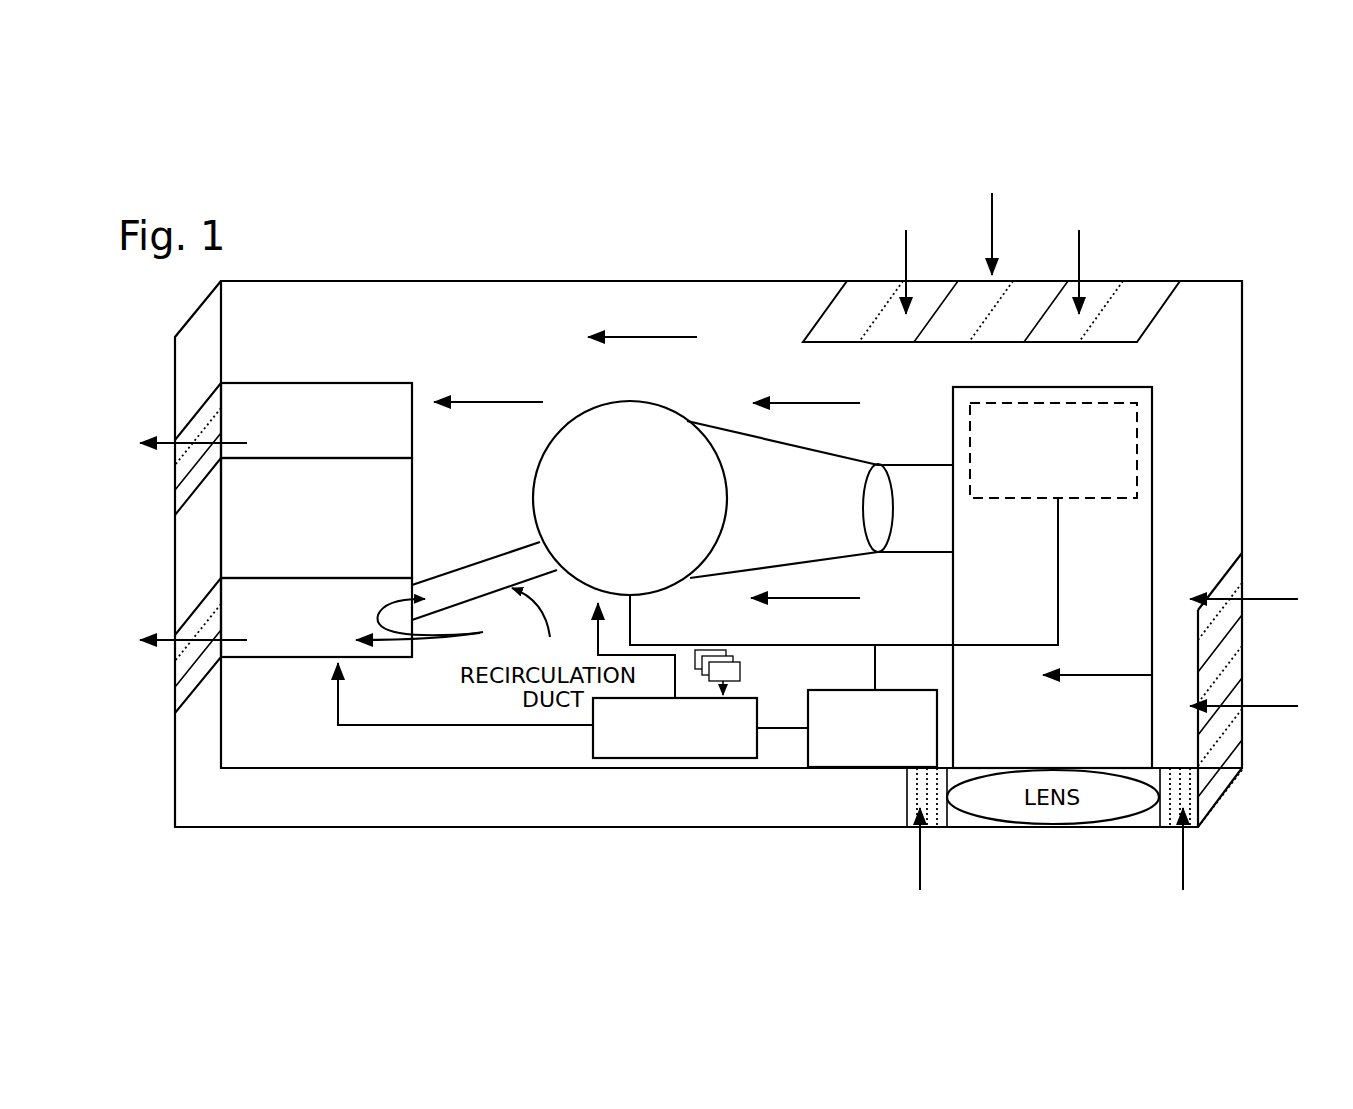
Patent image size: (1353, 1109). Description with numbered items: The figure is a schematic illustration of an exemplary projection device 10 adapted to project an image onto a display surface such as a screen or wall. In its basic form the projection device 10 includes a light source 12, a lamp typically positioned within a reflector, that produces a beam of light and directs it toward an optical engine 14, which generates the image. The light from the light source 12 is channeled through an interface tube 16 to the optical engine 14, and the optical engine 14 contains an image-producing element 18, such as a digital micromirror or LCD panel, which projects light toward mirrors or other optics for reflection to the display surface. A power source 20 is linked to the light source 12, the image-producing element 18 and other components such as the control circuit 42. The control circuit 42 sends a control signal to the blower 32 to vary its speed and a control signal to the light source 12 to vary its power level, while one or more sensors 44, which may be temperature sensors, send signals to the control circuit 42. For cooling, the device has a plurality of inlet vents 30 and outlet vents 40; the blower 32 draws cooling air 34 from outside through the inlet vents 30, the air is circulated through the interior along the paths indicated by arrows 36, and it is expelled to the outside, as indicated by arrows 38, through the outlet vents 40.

The projection device 10 is at (714, 238).
The light source 12 is at (630, 498).
The optical engine 14 is at (891, 577).
The interface tube 16 is at (820, 499).
The image-producing element 18 is at (1053, 451).
The power source 20 is at (872, 706).
The inlet vents 30 is at (1020, 300).
The blower 32 is at (418, 522).
The cooling air 34 is at (993, 230).
The circulated air arrows 36 is at (643, 337).
The expelled air arrows 38 is at (150, 450).
The outlet vents 40 is at (178, 503).
The control circuit 42 is at (573, 680).
The sensor 44 is at (740, 668).